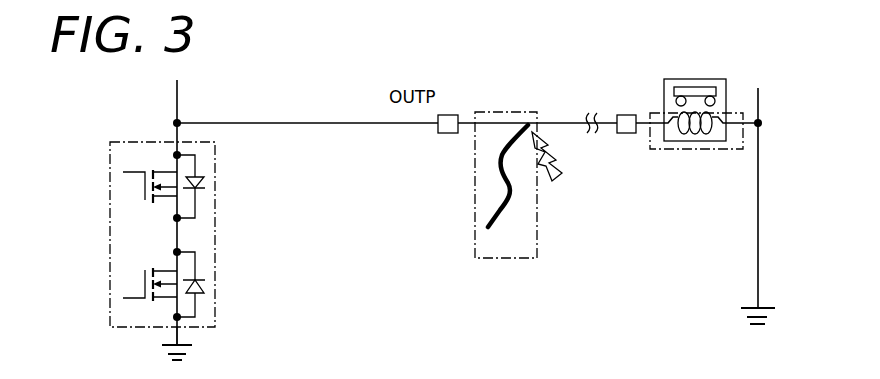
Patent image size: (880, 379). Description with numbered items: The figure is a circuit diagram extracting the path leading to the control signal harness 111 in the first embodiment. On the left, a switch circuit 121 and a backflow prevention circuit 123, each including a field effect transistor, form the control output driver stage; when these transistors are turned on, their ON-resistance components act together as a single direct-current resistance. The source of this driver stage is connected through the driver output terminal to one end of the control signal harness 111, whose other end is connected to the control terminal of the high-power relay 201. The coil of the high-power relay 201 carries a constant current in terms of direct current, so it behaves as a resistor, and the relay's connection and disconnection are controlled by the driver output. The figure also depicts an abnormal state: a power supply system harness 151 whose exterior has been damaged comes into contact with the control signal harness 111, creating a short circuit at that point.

The backflow prevention circuit 123 is at (143, 187).
The switch circuit 121 is at (143, 284).
The power supply system harness 151 is at (495, 203).
The control signal harness 111 is at (565, 121).
The high-power relay 201 is at (697, 79).